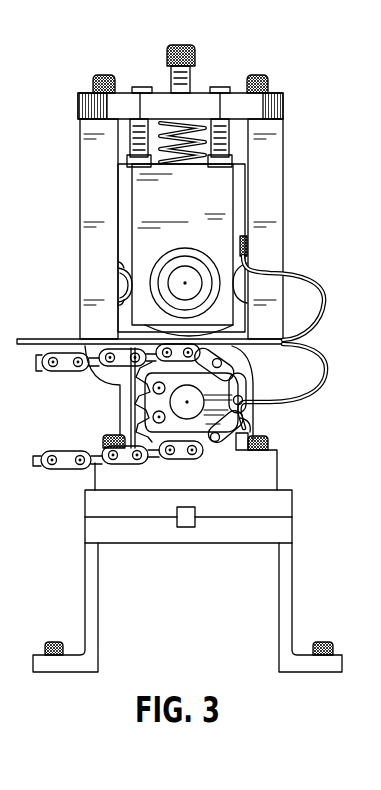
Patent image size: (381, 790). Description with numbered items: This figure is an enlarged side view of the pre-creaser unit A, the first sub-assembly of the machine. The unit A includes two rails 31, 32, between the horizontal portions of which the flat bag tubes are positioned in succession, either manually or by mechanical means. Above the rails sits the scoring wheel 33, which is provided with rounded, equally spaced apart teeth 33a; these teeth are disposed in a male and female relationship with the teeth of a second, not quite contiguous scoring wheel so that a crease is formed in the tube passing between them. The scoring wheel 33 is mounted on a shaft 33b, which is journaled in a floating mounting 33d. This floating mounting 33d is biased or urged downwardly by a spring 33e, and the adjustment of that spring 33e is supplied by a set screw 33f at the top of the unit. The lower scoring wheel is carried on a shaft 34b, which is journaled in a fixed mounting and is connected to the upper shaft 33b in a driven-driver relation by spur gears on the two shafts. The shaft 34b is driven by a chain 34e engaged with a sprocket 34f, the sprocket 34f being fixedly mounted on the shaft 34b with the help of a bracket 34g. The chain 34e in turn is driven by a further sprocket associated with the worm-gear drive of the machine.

The pre-creaser unit A is at (283, 145).
The rail 31 is at (316, 292).
The rail 32 is at (320, 370).
The scoring wheel 33 is at (127, 277).
The teeth 33a is at (125, 298).
The shaft 33b is at (187, 272).
The floating mounting 33d is at (220, 202).
The spring 33e is at (220, 128).
The set screw 33f is at (198, 58).
The shaft 34b is at (177, 402).
The chain 34e is at (65, 470).
The sprocket 34f is at (135, 393).
The bracket 34g is at (250, 422).